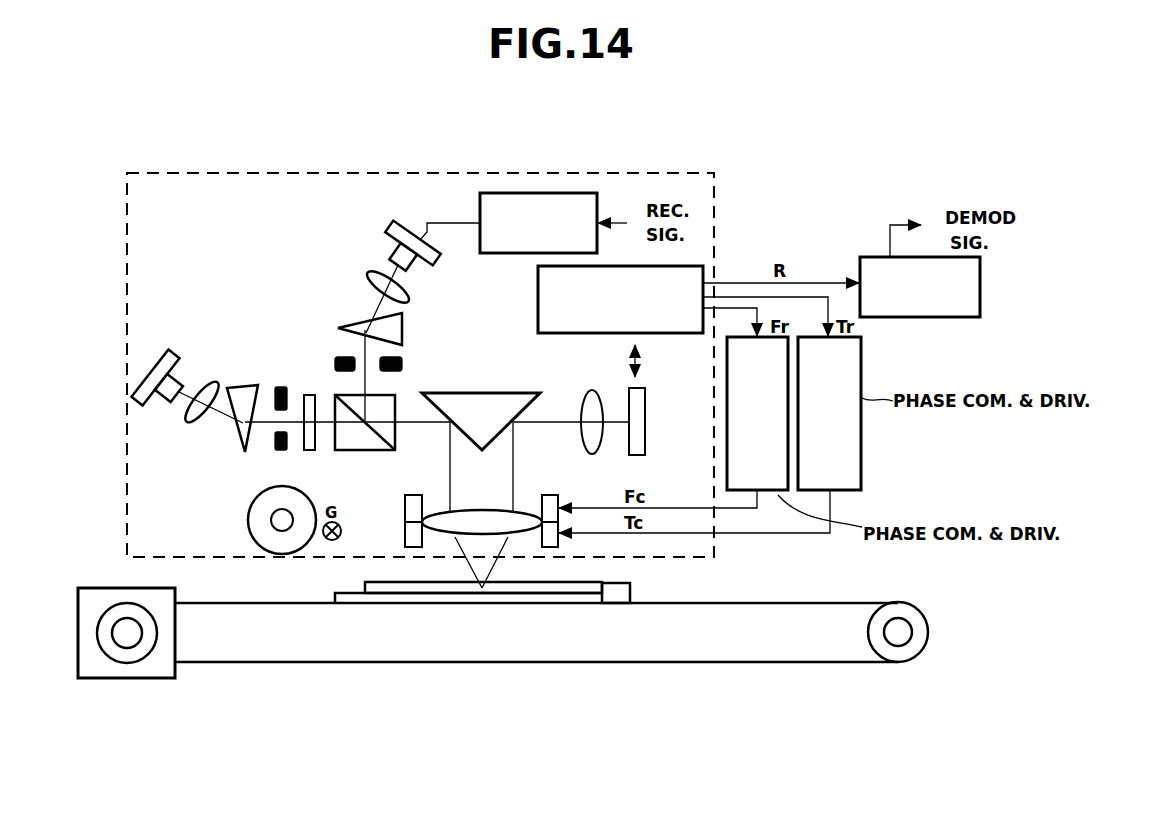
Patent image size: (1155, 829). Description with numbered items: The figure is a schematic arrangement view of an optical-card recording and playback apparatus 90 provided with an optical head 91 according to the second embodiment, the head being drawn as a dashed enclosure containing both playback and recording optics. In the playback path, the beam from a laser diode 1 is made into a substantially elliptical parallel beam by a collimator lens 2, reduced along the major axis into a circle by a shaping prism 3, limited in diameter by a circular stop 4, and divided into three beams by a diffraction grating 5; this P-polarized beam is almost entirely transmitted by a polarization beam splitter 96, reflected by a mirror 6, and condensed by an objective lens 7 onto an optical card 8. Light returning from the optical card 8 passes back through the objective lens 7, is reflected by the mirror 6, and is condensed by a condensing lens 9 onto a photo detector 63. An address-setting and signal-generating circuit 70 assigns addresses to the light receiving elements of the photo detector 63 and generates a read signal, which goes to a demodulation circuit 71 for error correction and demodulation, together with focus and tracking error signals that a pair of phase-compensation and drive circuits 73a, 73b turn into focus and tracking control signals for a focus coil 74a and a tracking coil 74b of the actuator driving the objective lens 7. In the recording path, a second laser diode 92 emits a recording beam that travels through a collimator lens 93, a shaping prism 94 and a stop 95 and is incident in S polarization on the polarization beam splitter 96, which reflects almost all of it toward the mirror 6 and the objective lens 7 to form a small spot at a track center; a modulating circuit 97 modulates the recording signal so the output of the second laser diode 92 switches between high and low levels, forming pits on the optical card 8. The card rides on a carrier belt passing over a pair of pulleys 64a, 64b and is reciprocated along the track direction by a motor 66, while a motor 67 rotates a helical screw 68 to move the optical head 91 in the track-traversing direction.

The laser diode 1 is at (164, 356).
The collimator lens 2 is at (212, 383).
The shaping prism 3 is at (237, 424).
The circular iris or stop 4 is at (273, 449).
The diffraction grating 5 is at (306, 395).
The mirror 6 is at (480, 393).
The objective lens 7 is at (493, 511).
The optical card 8 is at (423, 594).
The condensing lens 9 is at (583, 437).
The photo detector 63 is at (630, 392).
The pulley 64a is at (145, 640).
The pulley 64b is at (897, 650).
The motor 66 is at (170, 680).
The motor 67 is at (248, 520).
The helical screw 68 is at (279, 531).
The address-setting & signal-generating circuit 70 is at (677, 333).
The demodulation circuit 71 is at (947, 318).
The phase-compensation & drive circuit 73a is at (772, 492).
The phase-compensation & drive circuit 73b is at (862, 468).
The focus coil 74a is at (411, 496).
The tracking coil 74b is at (402, 540).
The optical-card recording and playback apparatus 90 is at (613, 683).
The optical head 91 is at (337, 173).
The second laser diode 92 is at (392, 232).
The collimator lens 93 is at (371, 280).
The shaping prism 94 is at (403, 328).
The stop 95 is at (341, 357).
The polarization beam splitter 96 is at (353, 450).
The modulating circuit 97 is at (545, 193).